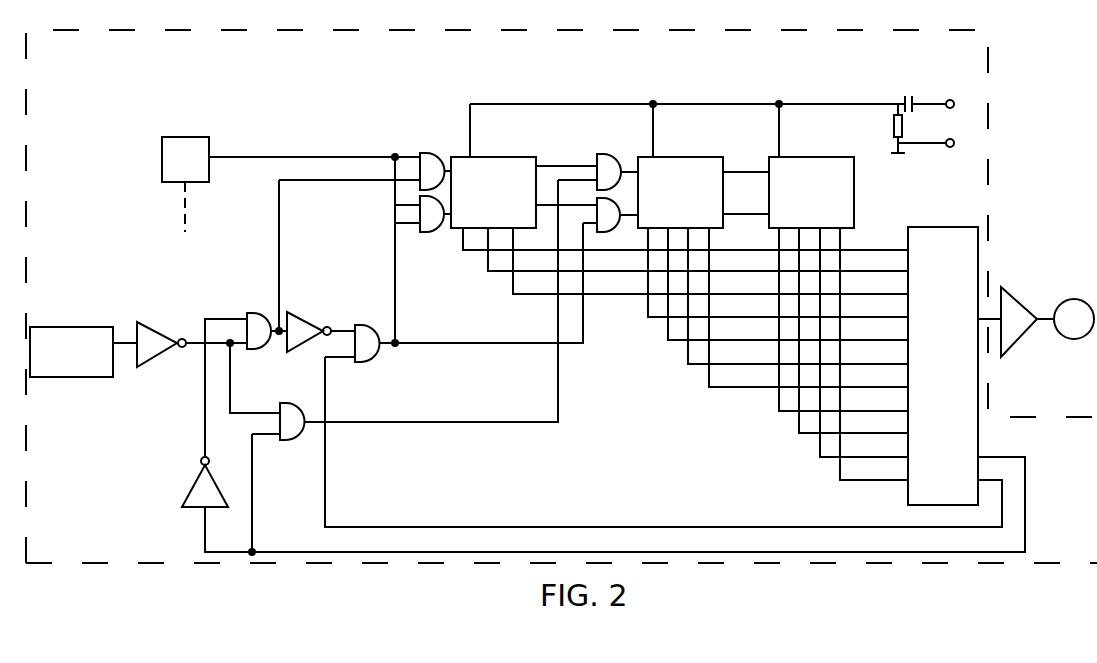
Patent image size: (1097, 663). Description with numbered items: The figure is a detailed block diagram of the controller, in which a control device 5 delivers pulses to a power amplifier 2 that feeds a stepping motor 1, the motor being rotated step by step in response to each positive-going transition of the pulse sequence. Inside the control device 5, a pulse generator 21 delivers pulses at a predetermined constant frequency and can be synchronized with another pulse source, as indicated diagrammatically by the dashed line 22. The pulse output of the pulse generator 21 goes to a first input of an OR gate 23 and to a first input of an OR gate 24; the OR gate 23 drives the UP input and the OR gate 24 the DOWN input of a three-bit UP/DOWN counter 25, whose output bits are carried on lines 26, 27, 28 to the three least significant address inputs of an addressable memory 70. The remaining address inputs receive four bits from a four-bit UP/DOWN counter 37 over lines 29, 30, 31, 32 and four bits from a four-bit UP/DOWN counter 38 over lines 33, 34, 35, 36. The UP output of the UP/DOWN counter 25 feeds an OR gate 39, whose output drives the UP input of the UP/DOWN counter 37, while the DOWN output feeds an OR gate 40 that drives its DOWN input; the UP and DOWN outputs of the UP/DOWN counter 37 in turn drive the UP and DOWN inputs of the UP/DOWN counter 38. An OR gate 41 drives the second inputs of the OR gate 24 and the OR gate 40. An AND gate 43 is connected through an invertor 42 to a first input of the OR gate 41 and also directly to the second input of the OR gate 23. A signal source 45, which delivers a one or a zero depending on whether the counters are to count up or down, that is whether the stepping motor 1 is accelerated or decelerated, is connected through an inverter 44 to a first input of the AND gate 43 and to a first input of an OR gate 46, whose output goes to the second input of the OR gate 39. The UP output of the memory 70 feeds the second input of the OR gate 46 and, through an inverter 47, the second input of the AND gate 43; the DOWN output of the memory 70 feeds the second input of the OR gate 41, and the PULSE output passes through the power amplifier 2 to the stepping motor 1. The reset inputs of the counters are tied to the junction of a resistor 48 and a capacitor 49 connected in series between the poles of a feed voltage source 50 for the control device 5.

The stepping motor 1 is at (1075, 299).
The power amplifier 2 is at (1006, 290).
The control device 5 is at (419, 84).
The pulse generator 21 is at (183, 137).
The dashed line 22 is at (190, 216).
The OR gate 23 is at (425, 153).
The OR gate 24 is at (426, 234).
The UP/DOWN counter 25 is at (500, 157).
The line 26 is at (463, 250).
The line 27 is at (488, 271).
The line 28 is at (513, 294).
The line 29 is at (648, 312).
The line 30 is at (668, 336).
The line 31 is at (688, 358).
The line 32 is at (709, 384).
The line 33 is at (772, 408).
The line 34 is at (794, 428).
The line 35 is at (816, 450).
The line 36 is at (838, 476).
The UP/DOWN counter 37 is at (689, 157).
The UP/DOWN counter 38 is at (808, 157).
The OR gate 39 is at (600, 154).
The OR gate 40 is at (602, 226).
The OR gate 41 is at (358, 325).
The invertor 42 is at (295, 312).
The AND gate 43 is at (248, 313).
The inverter 44 is at (147, 330).
The signal source 45 is at (100, 327).
The OR gate 46 is at (282, 403).
The inverter 47 is at (190, 485).
The resistor 48 is at (893, 132).
The capacitor 49 is at (905, 102).
The feed voltage source 50 is at (961, 123).
The addressable memory 70 is at (938, 227).